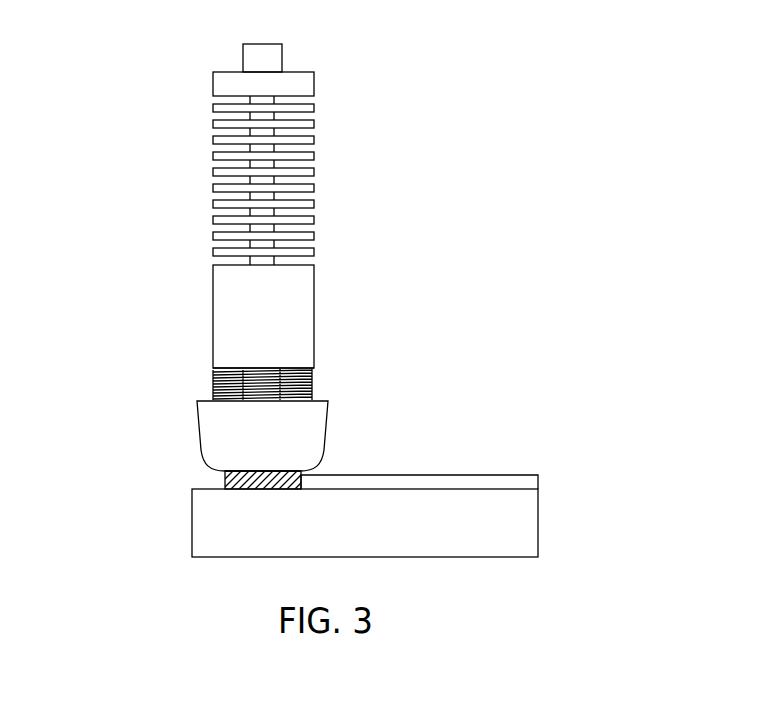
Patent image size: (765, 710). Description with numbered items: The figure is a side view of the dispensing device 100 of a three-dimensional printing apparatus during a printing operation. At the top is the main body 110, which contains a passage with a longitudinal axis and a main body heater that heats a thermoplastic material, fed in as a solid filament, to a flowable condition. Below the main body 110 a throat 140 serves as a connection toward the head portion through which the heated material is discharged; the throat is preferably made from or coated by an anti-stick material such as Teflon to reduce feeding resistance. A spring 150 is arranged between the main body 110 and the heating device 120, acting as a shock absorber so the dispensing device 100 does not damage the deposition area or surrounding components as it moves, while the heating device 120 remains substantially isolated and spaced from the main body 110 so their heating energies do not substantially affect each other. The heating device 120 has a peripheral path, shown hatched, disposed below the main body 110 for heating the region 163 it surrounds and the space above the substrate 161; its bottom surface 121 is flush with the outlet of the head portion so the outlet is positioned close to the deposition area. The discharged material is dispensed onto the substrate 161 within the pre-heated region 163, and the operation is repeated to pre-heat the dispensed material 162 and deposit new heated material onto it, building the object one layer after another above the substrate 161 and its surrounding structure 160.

The dispensing device 100 is at (128, 80).
The main body 110 is at (220, 322).
The heating device 120 is at (210, 437).
The bottom surface 121 is at (250, 474).
The throat 140 is at (263, 370).
The spring 150 is at (213, 374).
The test board 160 is at (547, 424).
The substrate 161 is at (530, 523).
The dispensed material 162 is at (530, 484).
The region 163 is at (240, 483).